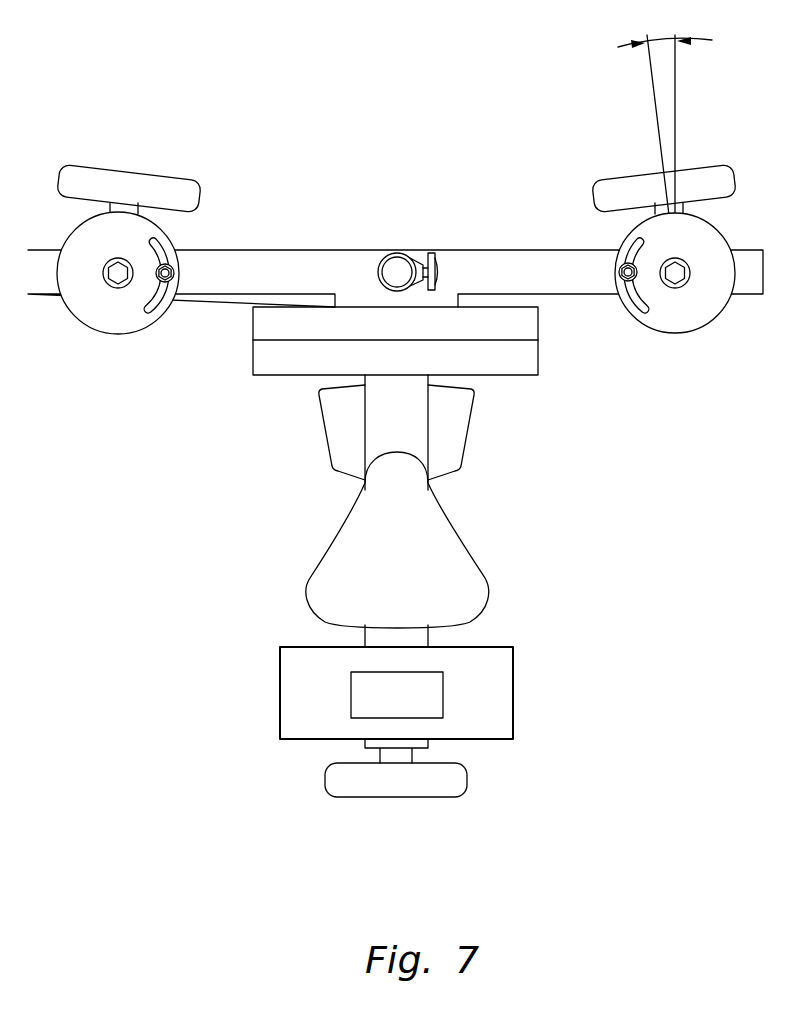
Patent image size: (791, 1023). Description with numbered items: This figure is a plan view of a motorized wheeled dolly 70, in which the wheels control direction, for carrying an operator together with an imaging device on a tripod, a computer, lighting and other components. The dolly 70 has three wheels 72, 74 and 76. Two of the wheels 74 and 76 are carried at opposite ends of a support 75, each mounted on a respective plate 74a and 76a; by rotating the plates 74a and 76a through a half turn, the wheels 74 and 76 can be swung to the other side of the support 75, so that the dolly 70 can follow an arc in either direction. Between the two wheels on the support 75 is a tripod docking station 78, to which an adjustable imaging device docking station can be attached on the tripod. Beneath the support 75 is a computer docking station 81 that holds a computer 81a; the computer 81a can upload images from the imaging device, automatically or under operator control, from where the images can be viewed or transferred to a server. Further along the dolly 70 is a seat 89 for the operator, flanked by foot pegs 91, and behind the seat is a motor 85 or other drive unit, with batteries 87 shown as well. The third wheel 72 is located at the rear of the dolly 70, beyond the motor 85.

The dolly 70 is at (148, 89).
The wheel 72 is at (428, 800).
The wheel 74 is at (167, 175).
The plate 74a is at (121, 334).
The support 75 is at (493, 250).
The wheel 76 is at (625, 177).
The plate 76a is at (675, 334).
The tripod docking station 78 is at (378, 273).
The computer docking station 81 is at (397, 347).
The computer 81a is at (540, 355).
The motor 85 is at (280, 696).
The batteries 87 is at (443, 695).
The seat 89 is at (308, 582).
The foot pegs 91 is at (467, 436).